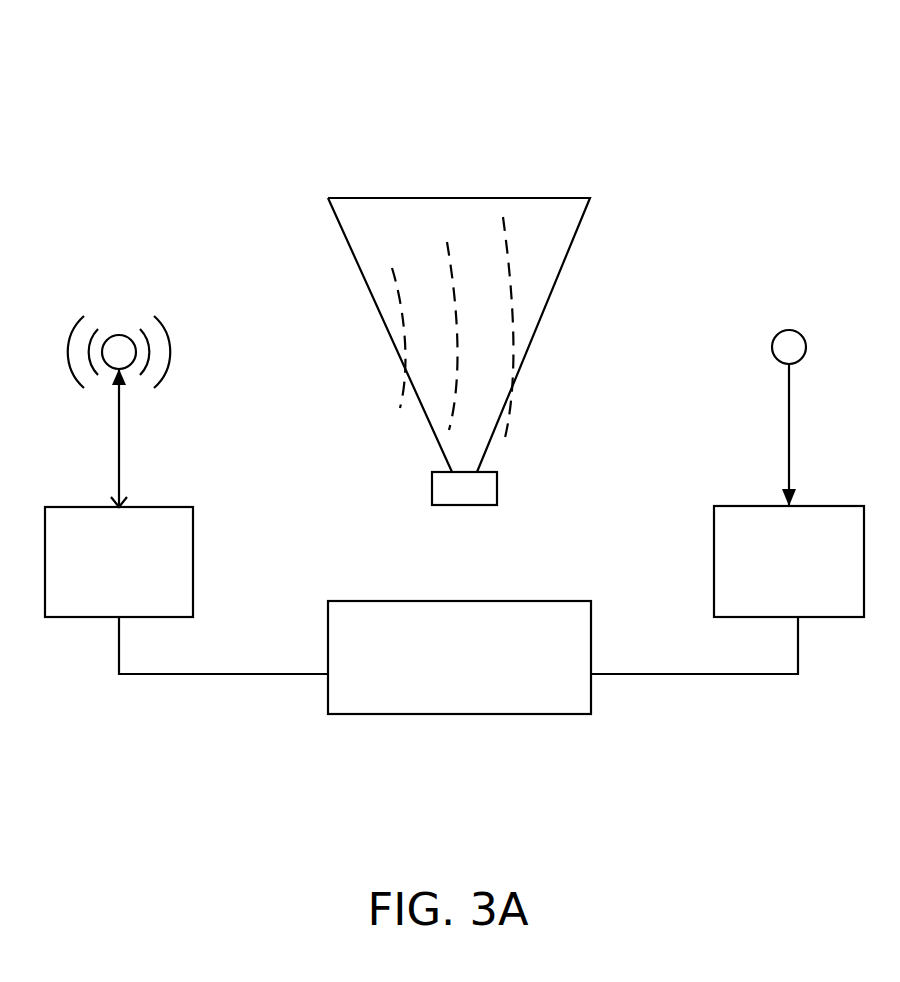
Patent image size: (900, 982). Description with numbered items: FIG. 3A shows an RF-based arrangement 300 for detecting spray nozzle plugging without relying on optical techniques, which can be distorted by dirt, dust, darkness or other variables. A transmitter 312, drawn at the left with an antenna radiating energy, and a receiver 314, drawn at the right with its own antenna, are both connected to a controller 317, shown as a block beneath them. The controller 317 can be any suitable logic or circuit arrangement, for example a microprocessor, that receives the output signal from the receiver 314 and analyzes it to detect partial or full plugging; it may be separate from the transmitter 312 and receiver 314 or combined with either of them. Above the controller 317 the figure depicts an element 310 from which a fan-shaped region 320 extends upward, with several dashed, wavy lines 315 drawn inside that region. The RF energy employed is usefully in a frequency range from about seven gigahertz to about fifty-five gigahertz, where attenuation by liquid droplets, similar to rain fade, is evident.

The system 300 is at (590, 103).
The transducer 310 is at (483, 483).
The transmitter 312 is at (119, 466).
The receiver 314 is at (789, 473).
The signal waves 315 is at (510, 253).
The controller 317 is at (458, 657).
The beam region 320 is at (550, 242).